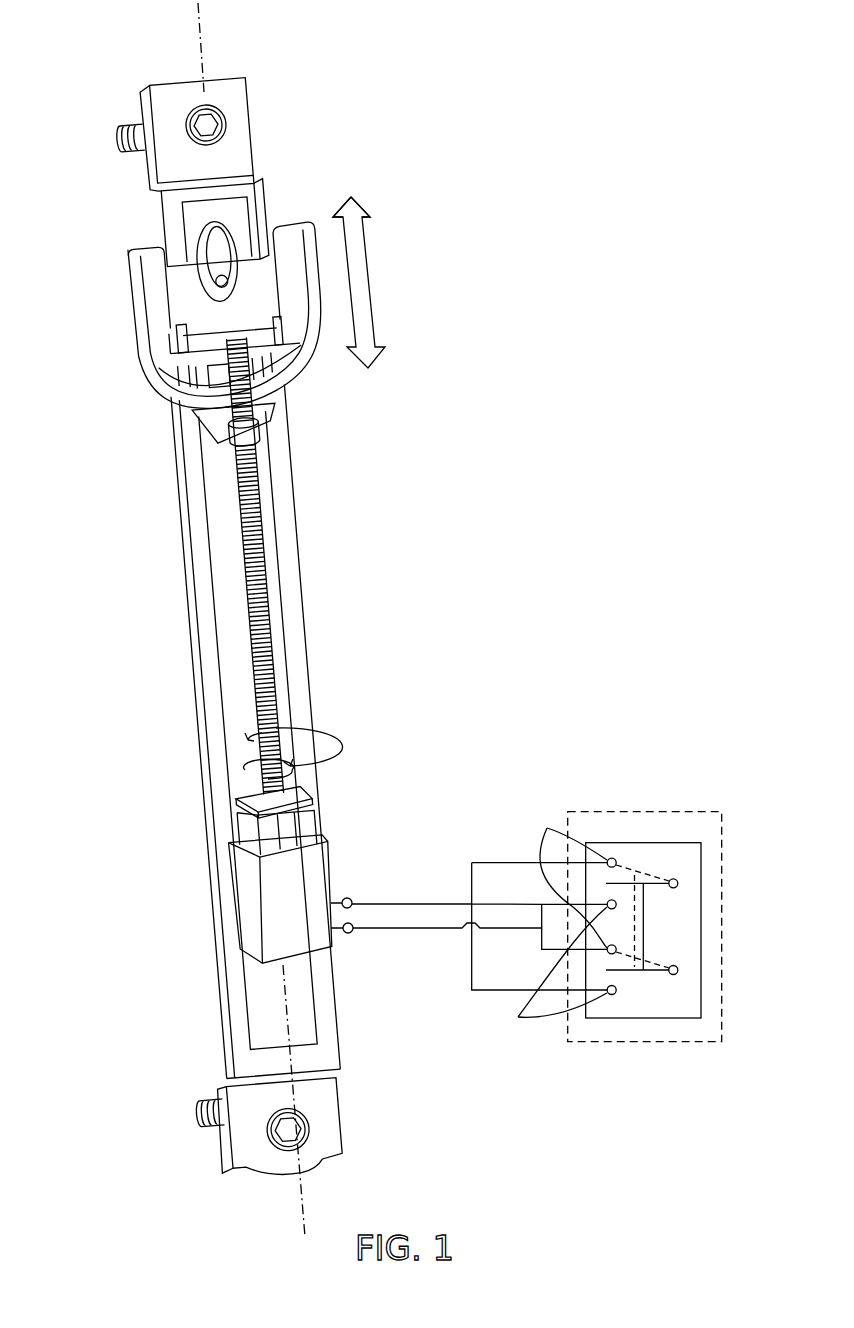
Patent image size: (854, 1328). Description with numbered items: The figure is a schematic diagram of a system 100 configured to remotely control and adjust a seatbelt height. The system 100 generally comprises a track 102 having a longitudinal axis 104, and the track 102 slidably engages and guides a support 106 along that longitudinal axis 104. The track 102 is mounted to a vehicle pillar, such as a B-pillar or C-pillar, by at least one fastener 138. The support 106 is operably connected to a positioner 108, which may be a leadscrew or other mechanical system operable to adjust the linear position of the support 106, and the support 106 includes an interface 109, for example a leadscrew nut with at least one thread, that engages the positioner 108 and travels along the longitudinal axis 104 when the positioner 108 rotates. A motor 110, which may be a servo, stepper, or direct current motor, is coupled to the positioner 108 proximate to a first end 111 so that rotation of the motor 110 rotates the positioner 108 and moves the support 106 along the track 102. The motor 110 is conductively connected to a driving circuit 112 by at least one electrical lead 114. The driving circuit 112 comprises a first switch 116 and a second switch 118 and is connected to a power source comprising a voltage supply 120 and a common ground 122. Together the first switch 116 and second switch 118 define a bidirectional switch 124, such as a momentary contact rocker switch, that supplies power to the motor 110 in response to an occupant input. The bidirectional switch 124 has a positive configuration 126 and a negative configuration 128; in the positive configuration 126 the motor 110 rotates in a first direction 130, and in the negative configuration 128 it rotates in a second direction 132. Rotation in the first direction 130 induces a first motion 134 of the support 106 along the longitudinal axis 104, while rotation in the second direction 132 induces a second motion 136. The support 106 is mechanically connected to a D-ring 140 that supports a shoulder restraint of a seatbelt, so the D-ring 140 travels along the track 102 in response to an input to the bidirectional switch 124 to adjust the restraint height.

The system 100 is at (385, 70).
The track 102 is at (198, 557).
The longitudinal axis 104 is at (200, 38).
The support 106 is at (262, 415).
The positioner 108 is at (262, 535).
The interface 109 is at (200, 426).
The motor 110 is at (245, 910).
The first end 111 is at (239, 759).
The driving circuit 112 is at (645, 910).
The electrical lead 114 is at (380, 927).
The first switch 116 is at (709, 872).
The second switch 118 is at (712, 981).
The voltage supply 120 is at (678, 881).
The common ground 122 is at (678, 971).
The bidirectional switch 124 is at (685, 1043).
The positive configuration 126 is at (562, 876).
The negative configuration 128 is at (545, 969).
The first direction 130 is at (250, 772).
The second direction 132 is at (283, 737).
The first motion 134 is at (377, 360).
The second motion 136 is at (360, 204).
The fastener 138 is at (142, 146).
The D-ring 140 is at (143, 287).